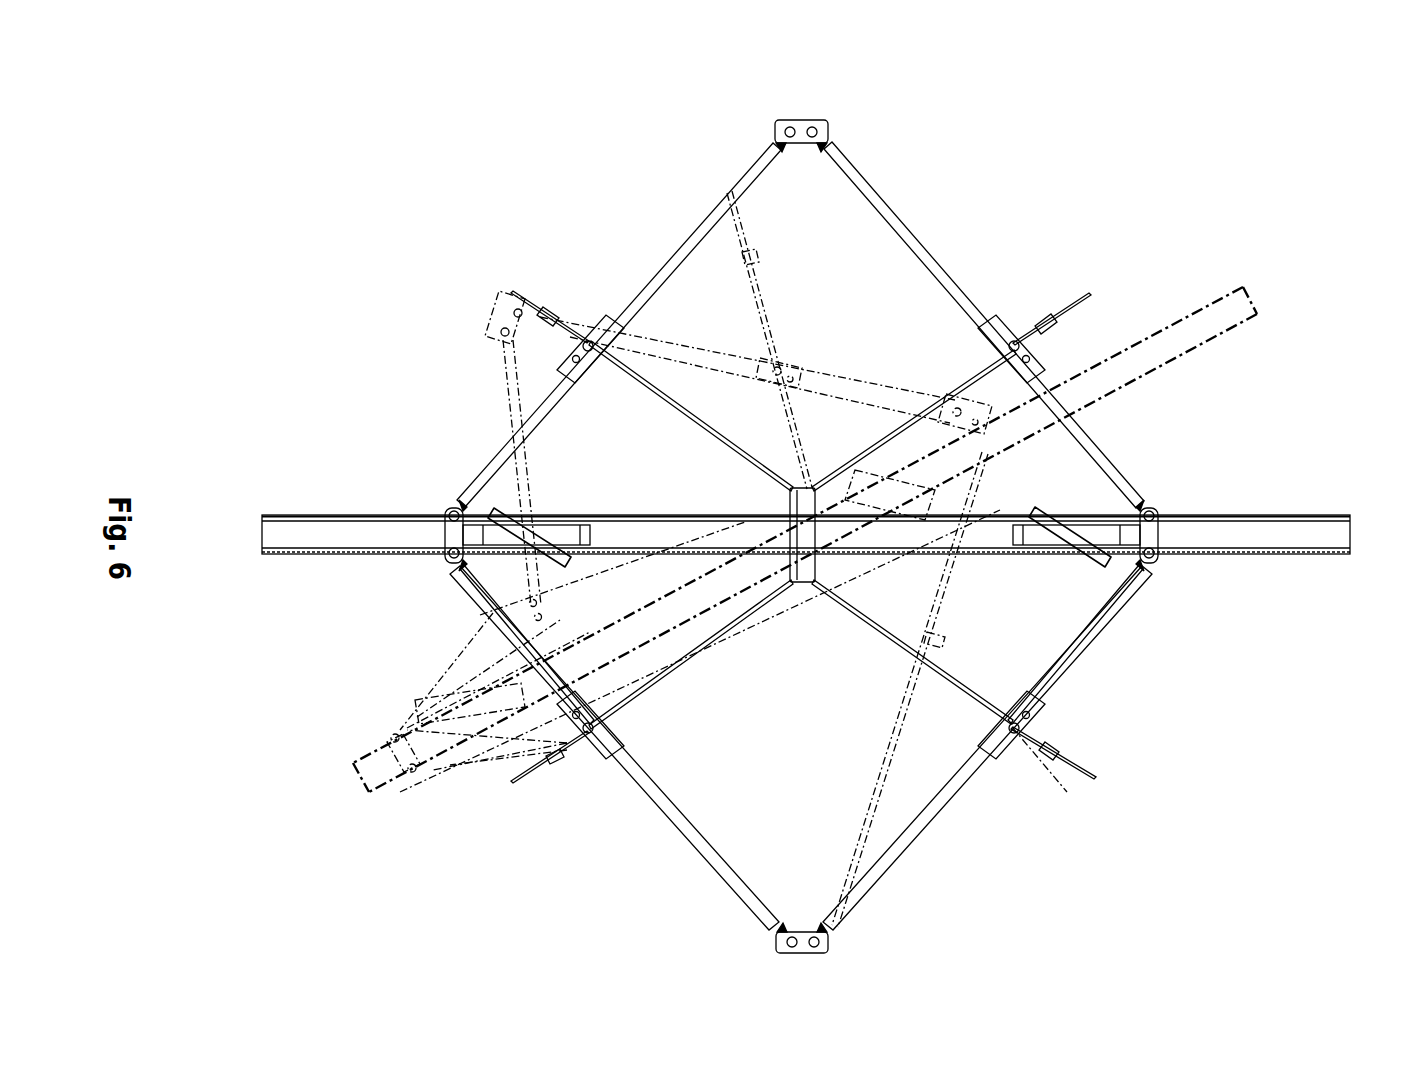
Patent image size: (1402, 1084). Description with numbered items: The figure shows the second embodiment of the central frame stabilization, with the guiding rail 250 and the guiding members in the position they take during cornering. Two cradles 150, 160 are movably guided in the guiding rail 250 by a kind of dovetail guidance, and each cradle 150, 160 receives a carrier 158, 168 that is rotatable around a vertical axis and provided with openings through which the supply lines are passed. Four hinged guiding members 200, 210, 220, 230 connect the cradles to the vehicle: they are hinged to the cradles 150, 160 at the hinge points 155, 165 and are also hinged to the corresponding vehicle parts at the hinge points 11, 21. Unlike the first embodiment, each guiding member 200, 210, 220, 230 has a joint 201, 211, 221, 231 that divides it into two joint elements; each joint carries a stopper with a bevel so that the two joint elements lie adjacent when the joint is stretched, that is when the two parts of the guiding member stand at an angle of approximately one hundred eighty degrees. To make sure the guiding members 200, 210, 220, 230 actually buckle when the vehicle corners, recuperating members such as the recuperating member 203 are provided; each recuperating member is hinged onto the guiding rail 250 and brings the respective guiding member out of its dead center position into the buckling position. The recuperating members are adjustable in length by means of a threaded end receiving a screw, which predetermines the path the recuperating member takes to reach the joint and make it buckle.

The hinge point on vehicle part 11 is at (822, 127).
The hinge point on vehicle part 21 is at (826, 943).
The cradle 150 is at (1048, 560).
The hinge point on cradle 155 is at (1149, 541).
The carrier 158 is at (1046, 541).
The cradle 160 is at (480, 590).
The hinge point on cradle 165 is at (452, 537).
The carrier 168 is at (487, 514).
The guiding member 200 is at (642, 287).
The joint 201 is at (553, 379).
The recuperating member 203 is at (563, 340).
The guiding member 210 is at (914, 241).
The joint 211 is at (1012, 338).
The guiding member 220 is at (676, 822).
The joint 221 is at (585, 754).
The guiding member 230 is at (965, 783).
The joint 231 is at (1050, 697).
The guiding rail 250 is at (1245, 530).